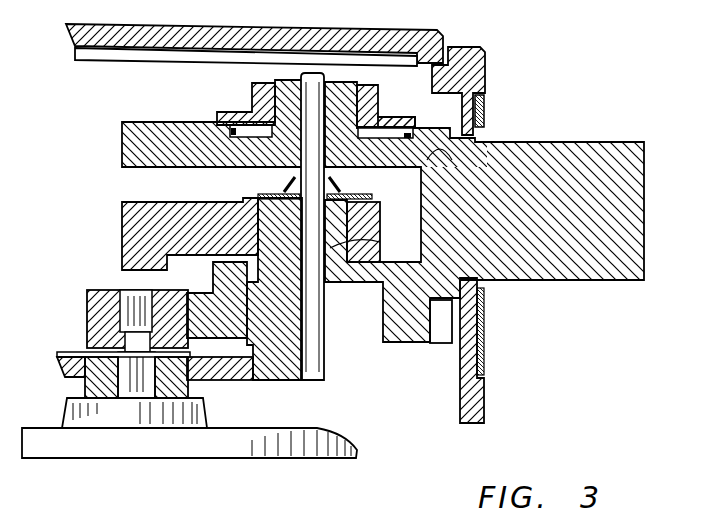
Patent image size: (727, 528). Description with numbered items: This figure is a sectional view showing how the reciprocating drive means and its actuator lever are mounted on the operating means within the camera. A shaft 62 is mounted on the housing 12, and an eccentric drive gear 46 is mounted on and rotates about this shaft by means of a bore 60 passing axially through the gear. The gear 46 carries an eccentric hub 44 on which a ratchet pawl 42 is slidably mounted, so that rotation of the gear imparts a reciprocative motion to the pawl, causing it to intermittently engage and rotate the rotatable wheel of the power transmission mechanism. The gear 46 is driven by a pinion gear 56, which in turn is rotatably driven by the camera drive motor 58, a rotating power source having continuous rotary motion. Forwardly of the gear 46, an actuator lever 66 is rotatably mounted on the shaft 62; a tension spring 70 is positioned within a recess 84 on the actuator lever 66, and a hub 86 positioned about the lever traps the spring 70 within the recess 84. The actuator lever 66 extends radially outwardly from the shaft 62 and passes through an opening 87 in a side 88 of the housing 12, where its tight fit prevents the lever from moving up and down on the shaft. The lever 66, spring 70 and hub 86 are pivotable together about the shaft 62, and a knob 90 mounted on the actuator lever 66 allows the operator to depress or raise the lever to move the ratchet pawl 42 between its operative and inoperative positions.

The housing 12 is at (258, 364).
The ratchet pawl 42 is at (167, 213).
The eccentric hub 44 is at (258, 205).
The eccentric drive gear 46 is at (417, 333).
The pinion gear 56 is at (92, 318).
The camera drive motor 58 is at (78, 441).
The bore 60 is at (376, 248).
The shaft 62 is at (303, 75).
The actuator lever 66 is at (454, 163).
The tension spring 70 is at (242, 118).
The recess 84 is at (378, 116).
The hub 86 is at (377, 90).
The opening 87 is at (486, 130).
The side 88 is at (486, 82).
The knob 90 is at (602, 141).